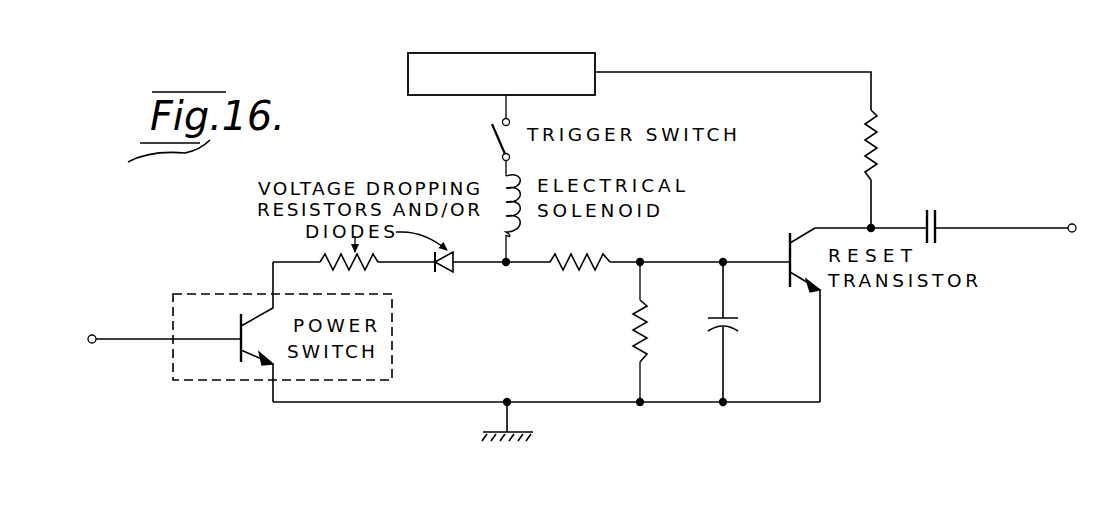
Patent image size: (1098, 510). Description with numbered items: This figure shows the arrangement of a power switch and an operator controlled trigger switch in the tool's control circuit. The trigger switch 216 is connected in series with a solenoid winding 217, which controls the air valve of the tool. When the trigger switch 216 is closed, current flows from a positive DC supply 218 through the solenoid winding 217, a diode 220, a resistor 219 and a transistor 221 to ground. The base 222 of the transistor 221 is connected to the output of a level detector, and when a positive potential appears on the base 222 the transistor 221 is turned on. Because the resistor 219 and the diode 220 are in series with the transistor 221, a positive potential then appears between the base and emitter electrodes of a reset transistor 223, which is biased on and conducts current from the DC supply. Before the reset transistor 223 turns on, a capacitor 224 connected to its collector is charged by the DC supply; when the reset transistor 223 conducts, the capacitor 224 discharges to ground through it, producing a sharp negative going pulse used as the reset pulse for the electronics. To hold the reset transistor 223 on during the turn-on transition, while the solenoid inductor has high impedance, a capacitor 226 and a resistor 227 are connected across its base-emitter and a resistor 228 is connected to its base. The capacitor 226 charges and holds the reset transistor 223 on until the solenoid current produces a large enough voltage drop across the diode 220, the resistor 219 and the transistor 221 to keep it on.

The trigger switch 216 is at (492, 133).
The solenoid winding 217 is at (520, 222).
The positive DC supply 218 is at (598, 56).
The resistor 219 is at (320, 254).
The diode 220 is at (453, 272).
The transistor 221 is at (240, 383).
The base 222 is at (240, 330).
The reset transistor 223 is at (808, 200).
The capacitor 224 is at (946, 192).
The capacitor 226 is at (735, 325).
The resistor 227 is at (632, 337).
The resistor 228 is at (583, 270).